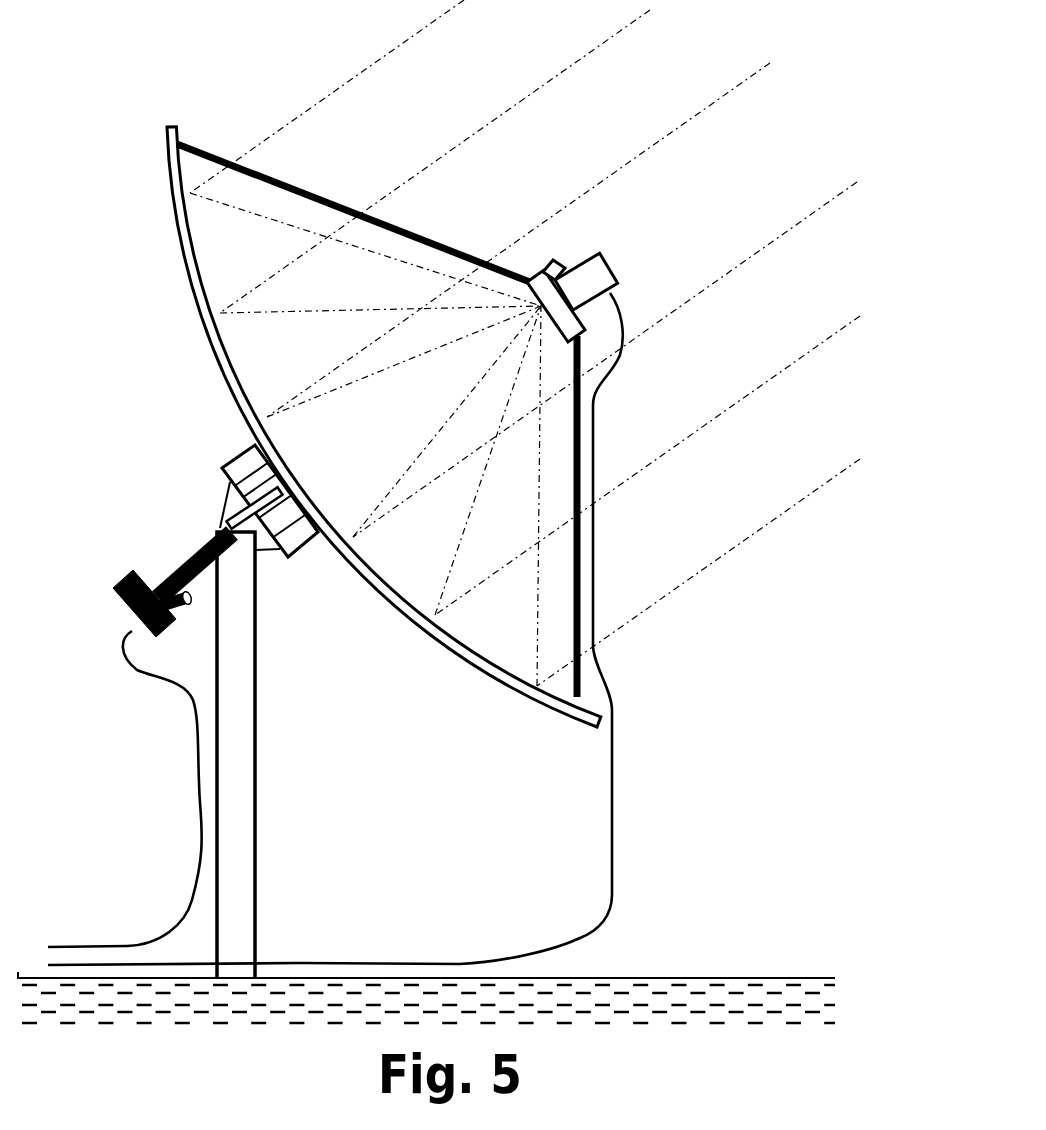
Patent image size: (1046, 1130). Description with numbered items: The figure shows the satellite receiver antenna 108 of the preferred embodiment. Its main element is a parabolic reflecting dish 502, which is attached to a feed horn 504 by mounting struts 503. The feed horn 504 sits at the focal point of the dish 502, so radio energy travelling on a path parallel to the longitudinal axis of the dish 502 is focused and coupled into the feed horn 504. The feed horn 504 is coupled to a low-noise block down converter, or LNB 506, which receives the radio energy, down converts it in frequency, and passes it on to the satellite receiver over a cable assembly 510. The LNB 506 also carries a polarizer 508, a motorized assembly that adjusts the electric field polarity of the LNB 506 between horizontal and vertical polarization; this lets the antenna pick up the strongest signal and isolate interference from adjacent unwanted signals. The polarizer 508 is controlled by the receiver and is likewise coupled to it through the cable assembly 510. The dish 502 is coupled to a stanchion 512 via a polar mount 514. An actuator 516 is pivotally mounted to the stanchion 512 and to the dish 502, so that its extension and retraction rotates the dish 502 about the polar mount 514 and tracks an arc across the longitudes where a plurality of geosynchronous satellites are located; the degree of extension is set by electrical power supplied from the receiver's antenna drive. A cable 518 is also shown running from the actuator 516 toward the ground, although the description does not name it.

The satellite receiver antenna 108 is at (70, 750).
The parabolic reflecting dish 502 is at (197, 310).
The mounting struts 503 is at (284, 178).
The feed horn 504 is at (538, 318).
The low-noise block down converter (LNB) 506 is at (613, 264).
The polarizer 508 is at (541, 260).
The cable assembly 510 is at (614, 844).
The stanchion 512 is at (254, 752).
The polar mount 514 is at (299, 558).
The actuator 516 is at (193, 549).
The cable 518 is at (200, 826).